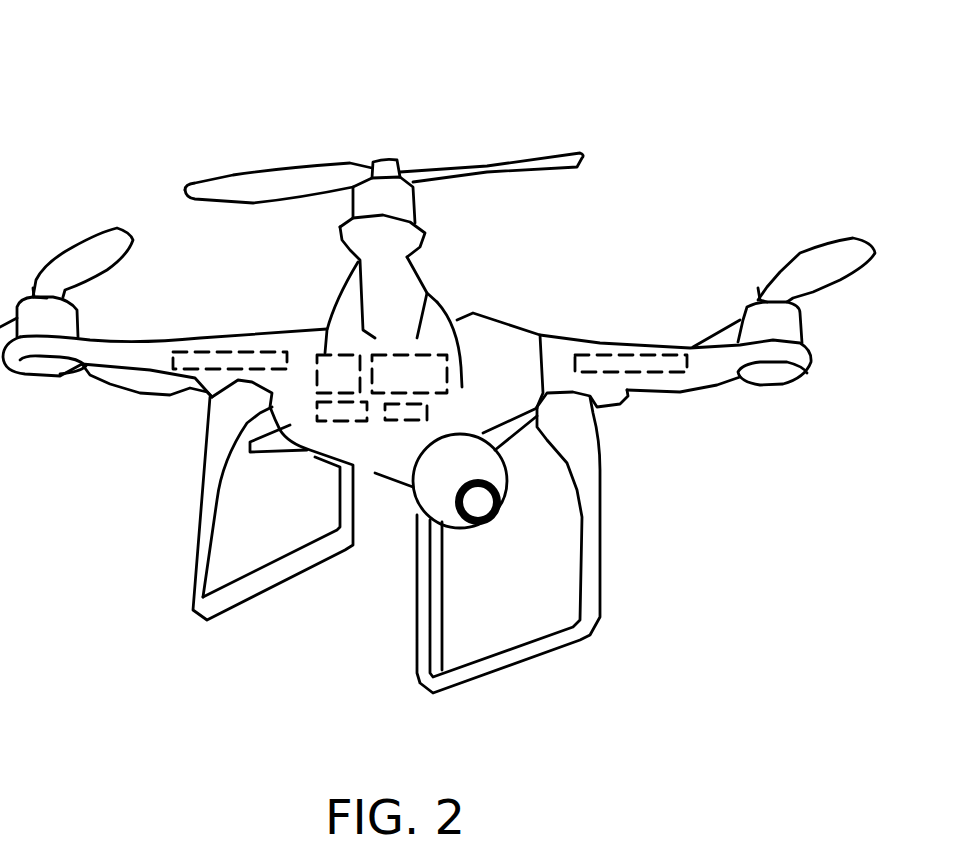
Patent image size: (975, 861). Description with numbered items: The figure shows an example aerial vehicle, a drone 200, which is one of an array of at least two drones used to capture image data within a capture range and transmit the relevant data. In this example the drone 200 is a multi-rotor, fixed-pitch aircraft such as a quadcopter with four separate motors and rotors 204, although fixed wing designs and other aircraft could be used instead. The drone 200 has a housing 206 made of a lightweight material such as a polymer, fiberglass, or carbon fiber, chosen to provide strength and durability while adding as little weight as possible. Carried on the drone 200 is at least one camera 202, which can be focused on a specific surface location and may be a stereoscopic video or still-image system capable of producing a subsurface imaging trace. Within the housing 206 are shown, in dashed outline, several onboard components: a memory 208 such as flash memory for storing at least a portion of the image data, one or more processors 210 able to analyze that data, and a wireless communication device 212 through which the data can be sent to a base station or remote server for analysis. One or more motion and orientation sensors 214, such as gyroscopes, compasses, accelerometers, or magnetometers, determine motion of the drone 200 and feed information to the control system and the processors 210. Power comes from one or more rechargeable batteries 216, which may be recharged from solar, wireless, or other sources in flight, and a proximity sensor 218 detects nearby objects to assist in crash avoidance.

The drone 200 is at (105, 31).
The camera 202 is at (460, 530).
The motors and rotors 204 is at (517, 160).
The housing 206 is at (625, 342).
The memory 208 is at (328, 422).
The processor 210 is at (193, 362).
The wireless communication device 212 is at (638, 372).
The motion and/or orientation sensors 214 is at (427, 354).
The rechargeable batteries 216 is at (325, 353).
The proximity sensor 218 is at (408, 421).